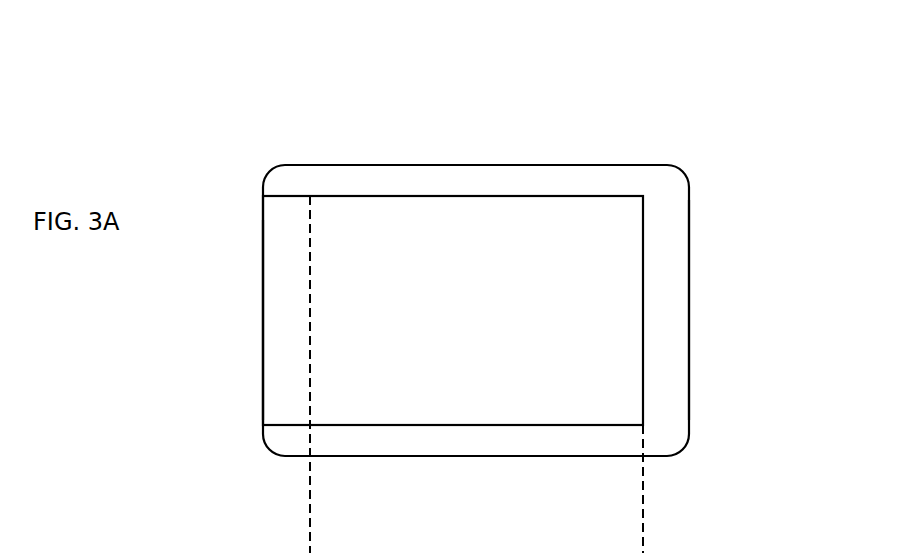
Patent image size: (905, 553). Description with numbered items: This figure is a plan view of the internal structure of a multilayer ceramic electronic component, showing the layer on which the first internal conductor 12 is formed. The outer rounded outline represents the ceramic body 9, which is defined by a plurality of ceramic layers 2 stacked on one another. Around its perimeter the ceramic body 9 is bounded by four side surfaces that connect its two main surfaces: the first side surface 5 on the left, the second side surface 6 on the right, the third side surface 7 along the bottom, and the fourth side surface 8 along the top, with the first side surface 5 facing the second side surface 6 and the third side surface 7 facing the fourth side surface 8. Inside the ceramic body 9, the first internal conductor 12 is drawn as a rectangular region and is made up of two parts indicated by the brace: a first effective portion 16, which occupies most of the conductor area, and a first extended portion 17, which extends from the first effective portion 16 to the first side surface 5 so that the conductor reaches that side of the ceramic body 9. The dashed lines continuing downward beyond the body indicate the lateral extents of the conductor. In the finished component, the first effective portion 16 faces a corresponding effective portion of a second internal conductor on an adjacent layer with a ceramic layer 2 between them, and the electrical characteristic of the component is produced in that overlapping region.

The ceramic body 9 is at (166, 78).
The ceramic layer 2 is at (681, 226).
The first side surface 5 is at (262, 347).
The second side surface 6 is at (690, 331).
The third side surface 7 is at (492, 458).
The fourth side surface 8 is at (535, 165).
The first internal conductor 12 is at (292, 81).
The first effective portion 16 is at (432, 222).
The first extended portion 17 is at (285, 212).